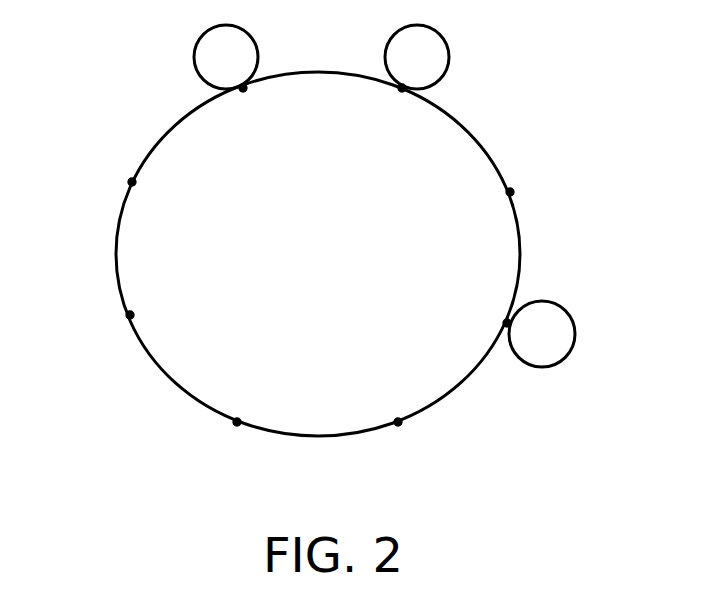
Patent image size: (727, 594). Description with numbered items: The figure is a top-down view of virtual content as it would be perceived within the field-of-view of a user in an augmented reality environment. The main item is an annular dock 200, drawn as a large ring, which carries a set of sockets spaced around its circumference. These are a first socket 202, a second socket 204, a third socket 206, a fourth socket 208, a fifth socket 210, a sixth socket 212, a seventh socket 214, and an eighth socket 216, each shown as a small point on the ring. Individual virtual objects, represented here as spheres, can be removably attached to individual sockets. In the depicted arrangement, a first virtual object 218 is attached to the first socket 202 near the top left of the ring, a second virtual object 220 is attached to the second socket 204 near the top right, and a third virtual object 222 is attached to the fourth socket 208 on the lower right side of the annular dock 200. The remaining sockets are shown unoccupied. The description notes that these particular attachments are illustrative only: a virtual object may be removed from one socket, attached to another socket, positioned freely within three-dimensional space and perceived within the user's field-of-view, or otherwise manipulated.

The annular dock 200 is at (493, 153).
The first socket 202 is at (243, 88).
The second socket 204 is at (402, 88).
The third socket 206 is at (510, 192).
The fourth socket 208 is at (507, 323).
The fifth socket 210 is at (398, 422).
The sixth socket 212 is at (237, 422).
The seventh socket 214 is at (130, 315).
The eighth socket 216 is at (132, 182).
The first virtual object 218 is at (193, 80).
The second virtual object 220 is at (450, 42).
The third virtual object 222 is at (575, 327).